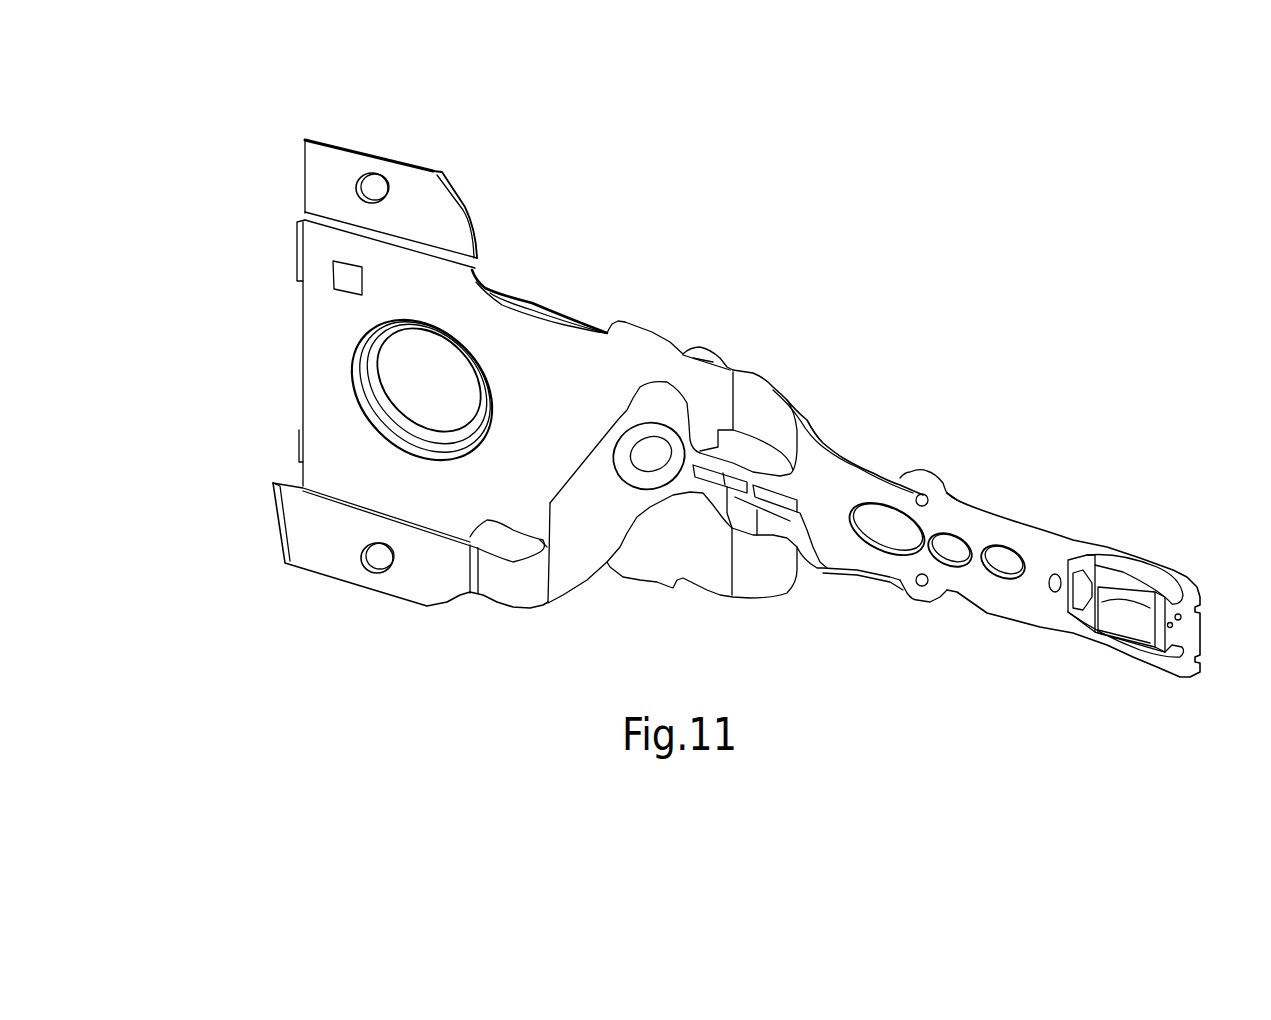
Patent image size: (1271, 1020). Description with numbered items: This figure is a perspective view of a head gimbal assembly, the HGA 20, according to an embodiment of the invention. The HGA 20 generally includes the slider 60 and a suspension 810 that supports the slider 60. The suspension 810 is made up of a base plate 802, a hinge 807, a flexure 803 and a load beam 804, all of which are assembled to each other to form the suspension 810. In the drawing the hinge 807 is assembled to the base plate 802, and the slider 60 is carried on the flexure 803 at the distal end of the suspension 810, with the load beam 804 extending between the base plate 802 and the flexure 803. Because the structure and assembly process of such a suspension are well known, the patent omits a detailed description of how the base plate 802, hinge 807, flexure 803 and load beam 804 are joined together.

The HGA 20 is at (113, 90).
The slider 60 is at (1122, 618).
The base plate 802 is at (703, 352).
The flexure 803 is at (959, 523).
The load beam 804 is at (805, 440).
The hinge 807 is at (747, 392).
The suspension 810 is at (947, 231).